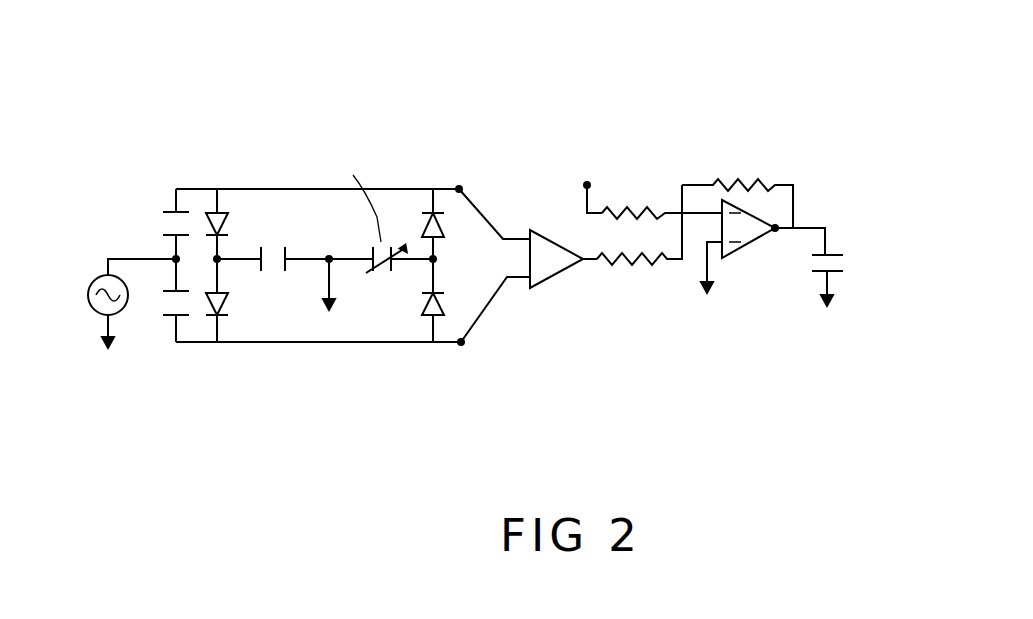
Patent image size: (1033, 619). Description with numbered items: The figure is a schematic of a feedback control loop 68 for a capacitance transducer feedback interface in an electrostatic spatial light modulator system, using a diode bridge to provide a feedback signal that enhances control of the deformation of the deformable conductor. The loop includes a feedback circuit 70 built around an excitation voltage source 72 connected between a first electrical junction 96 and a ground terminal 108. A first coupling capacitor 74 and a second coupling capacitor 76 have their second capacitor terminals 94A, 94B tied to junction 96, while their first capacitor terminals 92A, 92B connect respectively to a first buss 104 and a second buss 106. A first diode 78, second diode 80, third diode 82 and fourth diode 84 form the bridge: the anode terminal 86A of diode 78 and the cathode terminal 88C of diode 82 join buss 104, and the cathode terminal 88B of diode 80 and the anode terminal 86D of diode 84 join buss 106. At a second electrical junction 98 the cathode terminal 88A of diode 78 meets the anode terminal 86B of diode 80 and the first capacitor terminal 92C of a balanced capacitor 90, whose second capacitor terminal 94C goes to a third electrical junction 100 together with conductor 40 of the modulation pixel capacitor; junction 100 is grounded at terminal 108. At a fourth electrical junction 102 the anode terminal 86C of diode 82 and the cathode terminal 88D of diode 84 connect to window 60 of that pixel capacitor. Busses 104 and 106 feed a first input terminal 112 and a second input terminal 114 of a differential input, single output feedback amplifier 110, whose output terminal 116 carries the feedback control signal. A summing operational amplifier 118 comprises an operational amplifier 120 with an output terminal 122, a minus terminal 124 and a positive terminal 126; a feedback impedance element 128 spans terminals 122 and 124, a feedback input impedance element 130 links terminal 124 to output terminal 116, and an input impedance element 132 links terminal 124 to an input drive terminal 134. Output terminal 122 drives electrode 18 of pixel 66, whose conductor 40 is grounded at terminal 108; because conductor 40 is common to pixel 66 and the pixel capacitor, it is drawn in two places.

The electrode 18 is at (835, 252).
The conductor 40 is at (367, 273).
The window 60 is at (586, 246).
The pixel 66 is at (787, 240).
The feedback control loop 68 is at (506, 223).
The feedback circuit 70 is at (388, 352).
The excitation voltage source 72 is at (78, 298).
The first coupling capacitor 74 is at (160, 218).
The second coupling capacitor 76 is at (168, 303).
The first diode 78 is at (211, 207).
The second diode 80 is at (228, 305).
The third diode 82 is at (447, 183).
The fourth diode 84 is at (440, 318).
The anode terminal 86A is at (158, 136).
The anode terminal 86B is at (224, 389).
The anode terminal 86C is at (460, 228).
The anode terminal 86D is at (443, 300).
The cathode terminal 88A is at (221, 255).
The cathode terminal 88B is at (222, 320).
The cathode terminal 88C is at (430, 205).
The cathode terminal 88D is at (420, 300).
The balanced capacitor 90 is at (276, 245).
The first capacitor terminal 92A is at (116, 237).
The first capacitor terminal 92B is at (137, 395).
The first capacitor terminal 92C is at (303, 268).
The second capacitor terminal 94A is at (162, 241).
The second capacitor terminal 94B is at (163, 285).
The second capacitor terminal 94C is at (292, 248).
The first electrical junction 96 is at (166, 207).
The second electrical junction 98 is at (230, 254).
The third electrical junction 100 is at (338, 306).
The fourth electrical junction 102 is at (445, 259).
The first buss 104 is at (325, 187).
The second buss 106 is at (328, 343).
The ground terminal 108 is at (100, 348).
The feedback amplifier 110 is at (557, 277).
The first input terminal 112 is at (460, 183).
The second input terminal 114 is at (470, 343).
The output terminal 116 is at (590, 268).
The summing operational amplifier 118 is at (790, 212).
The operational amplifier 120 is at (782, 215).
The output terminal 122 is at (773, 240).
The minus terminal 124 is at (700, 207).
The positive terminal 126 is at (715, 250).
The feedback impedance element 128 is at (750, 172).
The feedback input impedance element 130 is at (643, 263).
The input impedance element 132 is at (633, 207).
The input drive terminal 134 is at (587, 178).